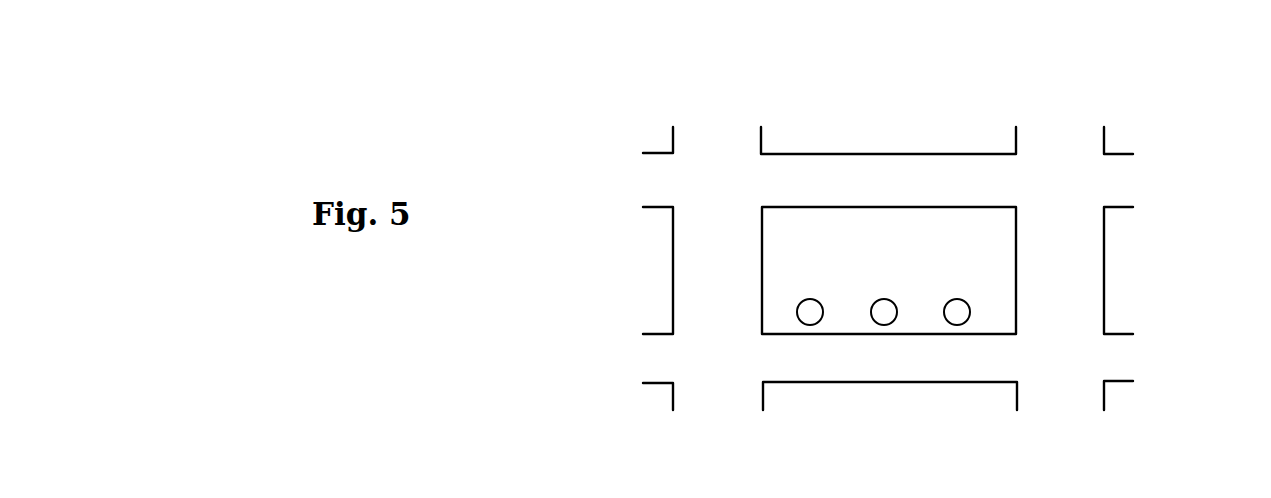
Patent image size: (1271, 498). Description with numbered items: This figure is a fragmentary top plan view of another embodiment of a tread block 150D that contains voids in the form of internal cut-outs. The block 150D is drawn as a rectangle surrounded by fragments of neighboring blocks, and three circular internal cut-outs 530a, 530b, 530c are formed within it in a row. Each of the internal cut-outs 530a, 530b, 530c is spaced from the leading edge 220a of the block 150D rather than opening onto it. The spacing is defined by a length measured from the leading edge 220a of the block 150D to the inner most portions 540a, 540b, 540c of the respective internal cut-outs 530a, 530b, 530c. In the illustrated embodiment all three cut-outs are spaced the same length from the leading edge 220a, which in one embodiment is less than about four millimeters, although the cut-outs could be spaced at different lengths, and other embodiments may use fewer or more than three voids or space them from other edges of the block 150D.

The block 150D is at (935, 245).
The leading edge 220a is at (837, 334).
The first internal cut-out 530a is at (808, 325).
The second internal cut-out 530b is at (884, 325).
The third internal cut-out 530c is at (957, 325).
The inner most portion of first internal cut-out 540a is at (817, 344).
The inner most portion of second internal cut-out 540b is at (906, 311).
The inner most portion of third internal cut-out 540c is at (982, 304).